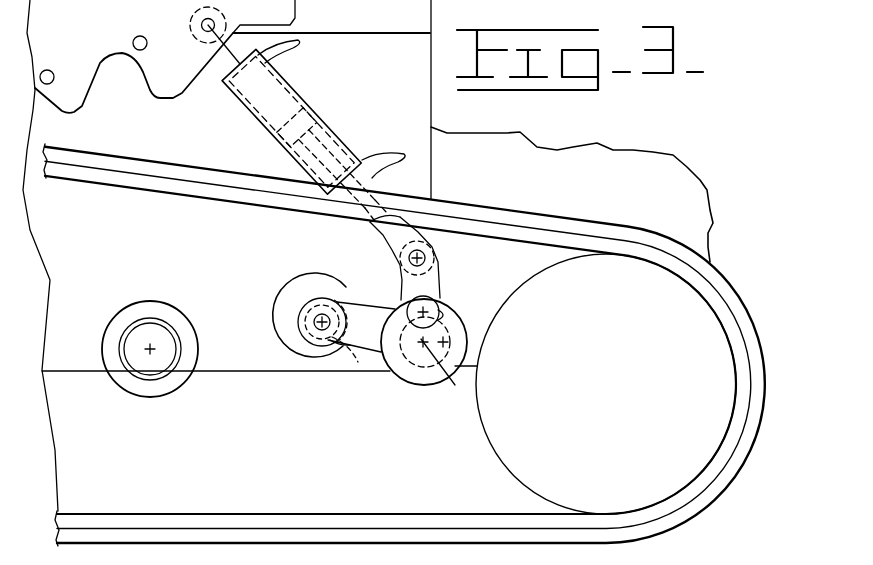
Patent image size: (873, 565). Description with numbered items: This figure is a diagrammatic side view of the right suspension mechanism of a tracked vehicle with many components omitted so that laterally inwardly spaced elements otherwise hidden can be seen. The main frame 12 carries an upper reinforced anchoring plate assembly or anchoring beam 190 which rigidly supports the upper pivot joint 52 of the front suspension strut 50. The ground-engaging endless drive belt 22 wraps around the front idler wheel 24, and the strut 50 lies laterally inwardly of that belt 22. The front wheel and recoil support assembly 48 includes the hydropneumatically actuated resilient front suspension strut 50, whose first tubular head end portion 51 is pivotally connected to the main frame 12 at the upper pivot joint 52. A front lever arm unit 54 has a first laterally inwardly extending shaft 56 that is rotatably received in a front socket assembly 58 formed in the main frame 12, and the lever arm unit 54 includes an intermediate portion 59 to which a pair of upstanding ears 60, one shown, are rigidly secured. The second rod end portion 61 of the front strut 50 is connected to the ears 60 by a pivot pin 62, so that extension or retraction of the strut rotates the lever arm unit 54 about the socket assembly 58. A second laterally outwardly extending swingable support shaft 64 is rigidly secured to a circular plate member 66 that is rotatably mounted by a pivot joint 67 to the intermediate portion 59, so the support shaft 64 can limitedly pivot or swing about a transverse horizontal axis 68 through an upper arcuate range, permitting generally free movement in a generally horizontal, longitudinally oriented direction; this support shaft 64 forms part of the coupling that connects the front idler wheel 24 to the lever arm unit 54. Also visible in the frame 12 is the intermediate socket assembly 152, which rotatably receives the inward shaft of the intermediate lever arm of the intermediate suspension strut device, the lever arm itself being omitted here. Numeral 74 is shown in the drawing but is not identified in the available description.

The main frame 12 is at (439, 115).
The drive belt 22 is at (287, 503).
The front idler wheel 24 is at (487, 457).
The front wheel and recoil support assembly 48 is at (370, 386).
The front suspension strut 50 is at (308, 83).
The first tubular head end portion 51 is at (262, 104).
The upper pivot joint 52 is at (226, 13).
The front lever arm unit 54 is at (304, 246).
The first laterally inwardly extending shaft 56 is at (350, 370).
The front socket assembly 58 is at (296, 302).
The intermediate portion 59 is at (385, 300).
The upstanding ears 60 is at (438, 285).
The second rod end portion 61 is at (383, 228).
The pivot pin 62 is at (437, 248).
The swingable support shaft 64 is at (448, 315).
The circular plate member 66 is at (433, 396).
The pivot joint 67 is at (452, 342).
The transverse horizontal axis 68 is at (448, 372).
The shaft 74 is at (425, 312).
The intermediate socket assembly 152 is at (137, 322).
The anchoring beam 190 is at (156, 104).